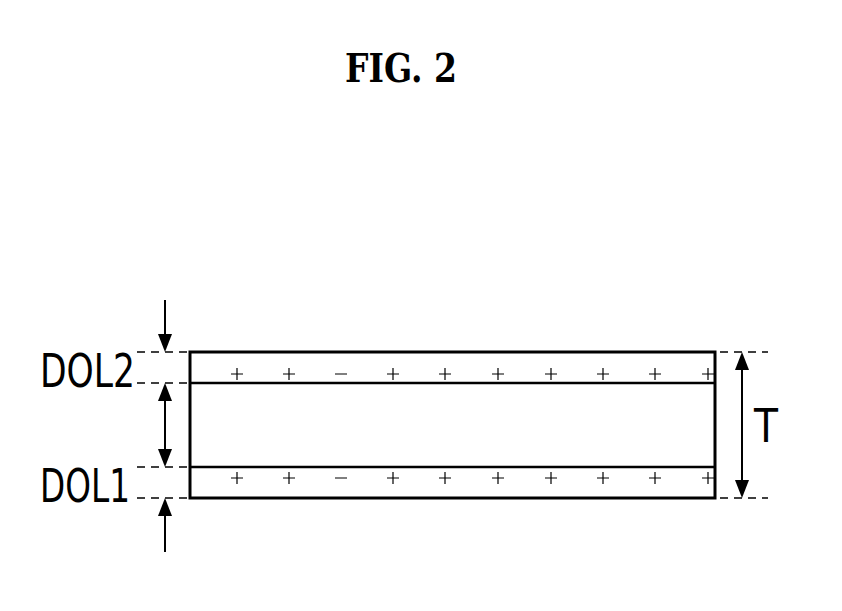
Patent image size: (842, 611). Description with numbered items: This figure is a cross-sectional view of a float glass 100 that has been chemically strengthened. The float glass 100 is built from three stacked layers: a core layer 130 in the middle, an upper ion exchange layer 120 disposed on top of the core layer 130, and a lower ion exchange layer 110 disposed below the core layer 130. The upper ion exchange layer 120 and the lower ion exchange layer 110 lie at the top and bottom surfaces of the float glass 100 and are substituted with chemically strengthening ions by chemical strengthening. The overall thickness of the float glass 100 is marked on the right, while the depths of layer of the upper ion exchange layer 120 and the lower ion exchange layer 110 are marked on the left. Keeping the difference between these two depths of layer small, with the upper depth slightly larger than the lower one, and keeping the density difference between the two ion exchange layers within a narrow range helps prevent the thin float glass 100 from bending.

The float glass 100 is at (464, 298).
The lower ion exchange layer 110 is at (287, 478).
The upper ion exchange layer 120 is at (273, 372).
The core layer 130 is at (668, 413).